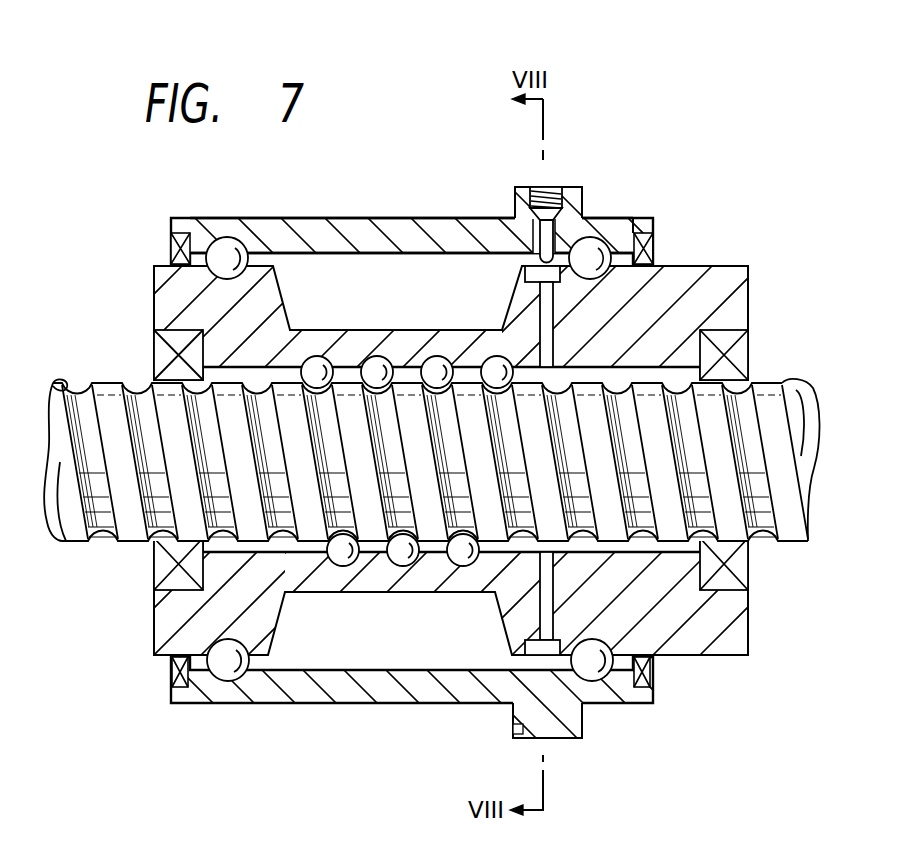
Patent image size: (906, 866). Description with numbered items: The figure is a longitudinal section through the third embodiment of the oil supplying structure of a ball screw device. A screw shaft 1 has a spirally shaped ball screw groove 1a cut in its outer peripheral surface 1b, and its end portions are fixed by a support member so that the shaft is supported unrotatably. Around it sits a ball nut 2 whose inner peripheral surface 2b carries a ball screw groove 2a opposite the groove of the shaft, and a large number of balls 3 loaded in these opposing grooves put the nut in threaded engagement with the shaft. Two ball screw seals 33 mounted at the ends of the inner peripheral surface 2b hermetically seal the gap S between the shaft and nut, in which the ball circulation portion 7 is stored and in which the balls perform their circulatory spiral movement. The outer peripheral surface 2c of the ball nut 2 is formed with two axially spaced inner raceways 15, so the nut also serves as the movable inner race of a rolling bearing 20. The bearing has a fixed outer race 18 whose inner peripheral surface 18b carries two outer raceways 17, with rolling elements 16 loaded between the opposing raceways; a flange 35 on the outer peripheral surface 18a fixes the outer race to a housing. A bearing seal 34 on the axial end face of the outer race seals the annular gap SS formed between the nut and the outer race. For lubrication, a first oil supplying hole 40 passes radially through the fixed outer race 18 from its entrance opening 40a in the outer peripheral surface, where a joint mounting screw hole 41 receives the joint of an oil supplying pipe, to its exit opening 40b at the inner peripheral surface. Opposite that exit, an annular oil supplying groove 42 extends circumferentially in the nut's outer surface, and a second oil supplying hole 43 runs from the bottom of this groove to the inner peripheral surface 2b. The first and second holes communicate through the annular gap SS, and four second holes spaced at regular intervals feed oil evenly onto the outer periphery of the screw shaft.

The screw shaft 1 is at (118, 544).
The ball screw groove 1a is at (140, 388).
The outer peripheral surface 1b is at (62, 383).
The ball nut 2 is at (734, 266).
The ball screw groove 2a is at (315, 356).
The inner peripheral surface 2b is at (237, 360).
The outer peripheral surface 2c is at (748, 284).
The balls 3 is at (321, 361).
The ball circulation portion 7 is at (386, 563).
The inner raceway 15 is at (642, 244).
The rolling elements 16 is at (233, 250).
The outer raceway 17 is at (595, 246).
The fixed outer race 18 is at (590, 226).
The outer peripheral surface 18a is at (371, 217).
The inner peripheral surface 18b is at (377, 256).
The rolling bearing 20 is at (668, 238).
The ball screw seal 33 is at (165, 346).
The bearing seal 34 is at (182, 235).
The flange 35 is at (575, 188).
The first oil supplying hole 40 is at (538, 195).
The entrance opening 40a is at (543, 188).
The exit opening 40b is at (538, 238).
The joint mounting screw hole 41 is at (558, 188).
The annular oil supplying groove 42 is at (538, 250).
The second oil supplying hole 43 is at (540, 308).
The gap S is at (746, 376).
The annular gap SS is at (446, 294).